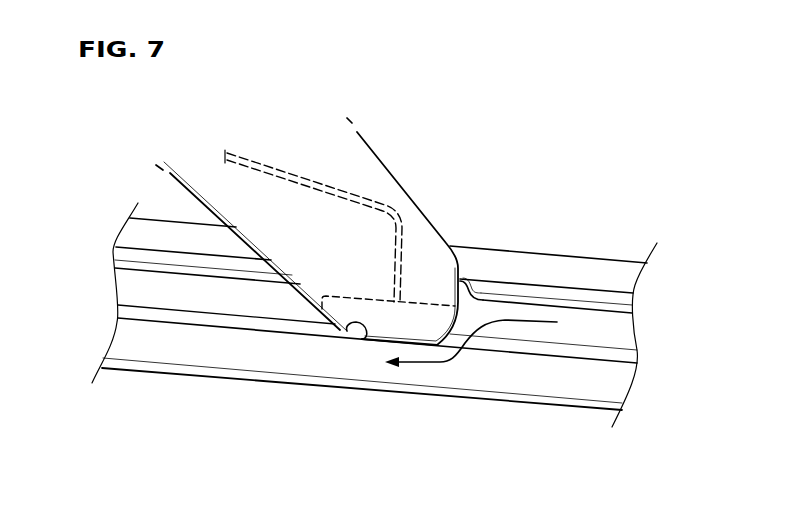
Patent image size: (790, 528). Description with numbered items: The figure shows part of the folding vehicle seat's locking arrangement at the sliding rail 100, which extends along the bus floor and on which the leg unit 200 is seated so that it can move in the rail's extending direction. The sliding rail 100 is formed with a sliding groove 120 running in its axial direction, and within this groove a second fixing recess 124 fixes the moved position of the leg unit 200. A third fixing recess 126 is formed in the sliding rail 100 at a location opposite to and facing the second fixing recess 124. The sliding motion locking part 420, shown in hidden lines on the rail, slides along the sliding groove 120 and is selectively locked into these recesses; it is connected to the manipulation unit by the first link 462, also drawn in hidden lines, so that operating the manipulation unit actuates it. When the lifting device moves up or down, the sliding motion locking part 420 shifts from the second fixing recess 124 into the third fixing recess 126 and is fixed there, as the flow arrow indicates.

The sliding rail 100 is at (511, 409).
The sliding groove 120 is at (583, 323).
The second fixing recess 124 is at (355, 332).
The third fixing recess 126 is at (498, 295).
The leg unit 200 is at (408, 183).
The sliding motion locking part 420 is at (340, 292).
The first link 462 is at (348, 195).